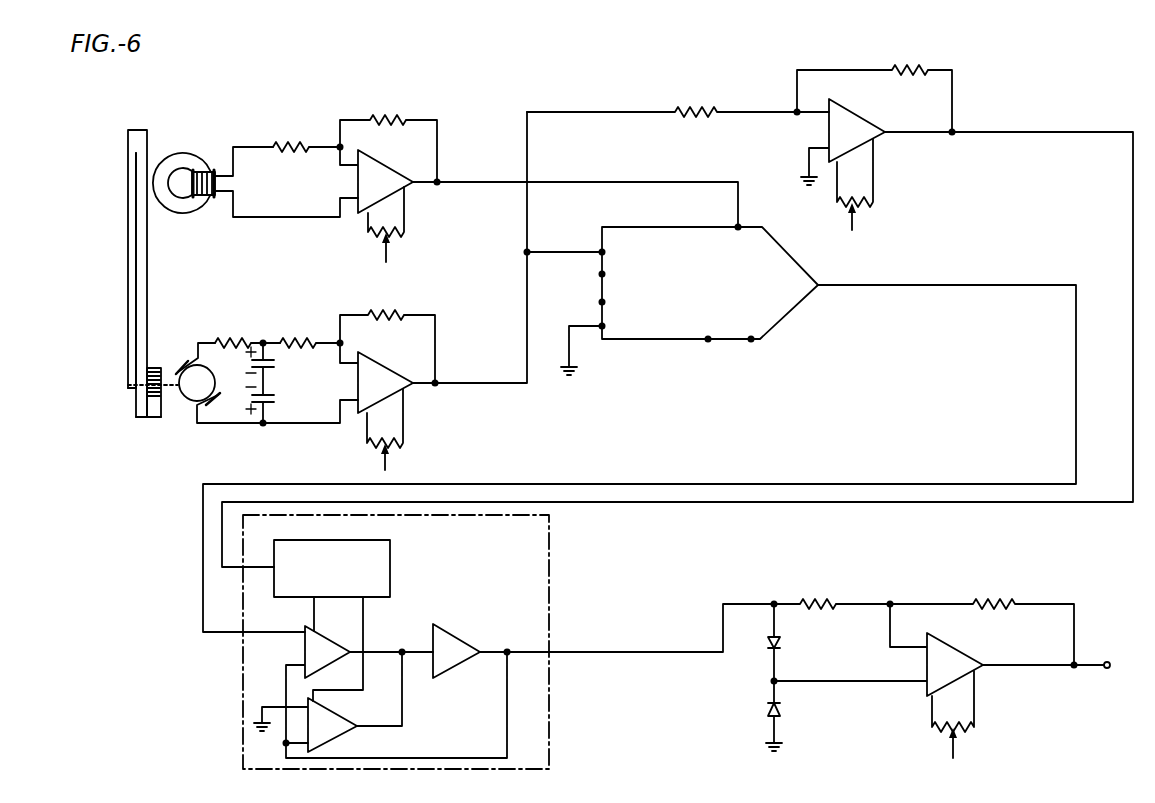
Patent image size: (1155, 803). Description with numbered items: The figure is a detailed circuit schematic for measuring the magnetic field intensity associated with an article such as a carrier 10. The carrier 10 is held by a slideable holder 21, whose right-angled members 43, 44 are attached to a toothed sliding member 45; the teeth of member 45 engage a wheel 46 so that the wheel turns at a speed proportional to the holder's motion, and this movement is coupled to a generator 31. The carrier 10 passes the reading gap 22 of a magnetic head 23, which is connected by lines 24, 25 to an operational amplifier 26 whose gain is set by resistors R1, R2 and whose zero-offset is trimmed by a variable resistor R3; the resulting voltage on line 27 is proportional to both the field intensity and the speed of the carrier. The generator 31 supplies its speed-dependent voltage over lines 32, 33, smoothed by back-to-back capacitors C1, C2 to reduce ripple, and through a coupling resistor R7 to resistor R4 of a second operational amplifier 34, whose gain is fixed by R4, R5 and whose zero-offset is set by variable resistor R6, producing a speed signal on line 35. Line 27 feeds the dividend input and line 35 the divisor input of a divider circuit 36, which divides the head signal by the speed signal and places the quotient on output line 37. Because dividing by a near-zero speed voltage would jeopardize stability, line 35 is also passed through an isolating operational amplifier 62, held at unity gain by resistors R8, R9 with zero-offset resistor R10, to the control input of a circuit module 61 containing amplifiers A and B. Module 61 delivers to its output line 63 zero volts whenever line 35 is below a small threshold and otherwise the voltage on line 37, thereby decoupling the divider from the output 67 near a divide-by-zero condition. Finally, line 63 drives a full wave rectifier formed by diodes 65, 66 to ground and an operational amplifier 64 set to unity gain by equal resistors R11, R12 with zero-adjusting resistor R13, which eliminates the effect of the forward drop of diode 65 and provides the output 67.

The carrier 10 is at (122, 217).
The slideable holder 21 is at (143, 422).
The reading gap 22 is at (180, 168).
The magnetic reading head 23 is at (195, 153).
The line 24 is at (244, 148).
The line 25 is at (262, 217).
The operational amplifier 26 is at (383, 168).
The output line 27 is at (476, 182).
The generator 31 is at (208, 378).
The line 32 is at (206, 341).
The line 33 is at (253, 424).
The operational amplifier 34 is at (382, 370).
The line 35 is at (470, 383).
The divider circuit 36 is at (790, 310).
The output line 37 is at (978, 289).
The right-angled member 43 is at (148, 292).
The right-angled member 44 is at (128, 412).
The toothed sliding member 45 is at (160, 414).
The wheel 46 is at (158, 368).
The circuit module 61 is at (243, 688).
The isolating operational amplifier 62 is at (868, 125).
The output line 63 is at (608, 652).
The operational amplifier 64 is at (958, 662).
The diode 65 is at (785, 641).
The diode 66 is at (785, 710).
The output 67 is at (1092, 664).
The resistor R1 is at (288, 146).
The resistor R2 is at (390, 120).
The variable resistor R3 is at (398, 236).
The resistor R4 is at (300, 341).
The resistor R5 is at (383, 314).
The variable resistor R6 is at (400, 446).
The resistor R7 is at (228, 341).
The resistor R8 is at (696, 111).
The resistor R9 is at (908, 66).
The zero-offset adjusting resistor R10 is at (866, 209).
The resistor R11 is at (812, 601).
The resistor R12 is at (992, 601).
The zero-adjusting resistor R13 is at (968, 729).
The smoothing capacitor C1 is at (275, 364).
The smoothing capacitor C2 is at (275, 401).